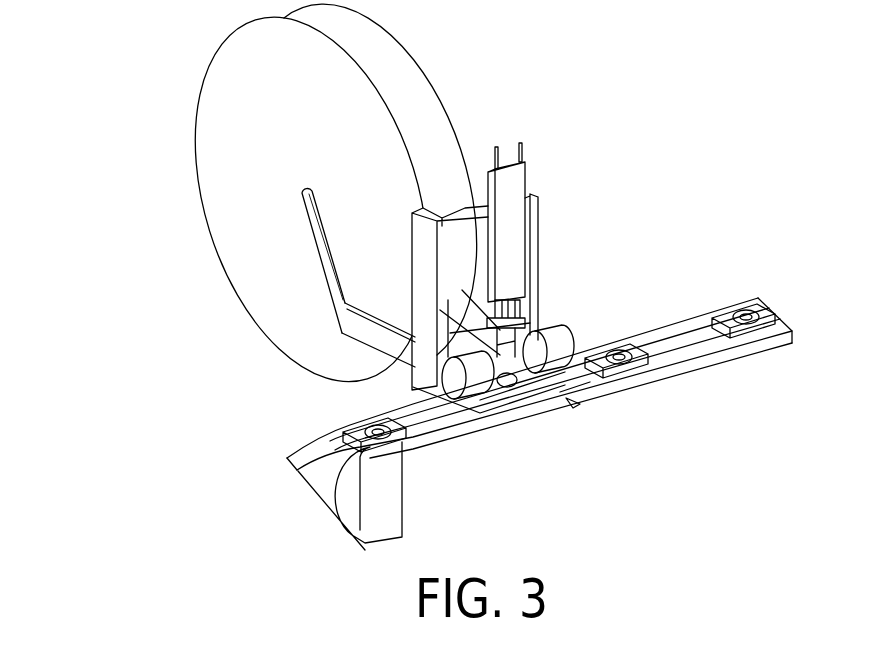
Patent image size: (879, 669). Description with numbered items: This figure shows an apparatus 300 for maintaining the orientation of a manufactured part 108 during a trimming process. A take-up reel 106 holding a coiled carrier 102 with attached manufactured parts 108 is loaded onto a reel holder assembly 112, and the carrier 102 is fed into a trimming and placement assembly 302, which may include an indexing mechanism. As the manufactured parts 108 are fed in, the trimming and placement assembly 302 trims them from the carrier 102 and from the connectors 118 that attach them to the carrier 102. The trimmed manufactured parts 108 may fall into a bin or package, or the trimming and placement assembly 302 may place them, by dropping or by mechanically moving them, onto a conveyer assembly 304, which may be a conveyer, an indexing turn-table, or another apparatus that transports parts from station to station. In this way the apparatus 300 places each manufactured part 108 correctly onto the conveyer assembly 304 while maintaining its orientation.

The apparatus 300 is at (156, 93).
The trimming and placement assembly 302 is at (527, 180).
The conveyer assembly 304 is at (721, 311).
The take-up reel 106 is at (222, 262).
The reel holder assembly 112 is at (333, 311).
The manufactured part 108 is at (505, 400).
The connectors 118 is at (573, 402).
The carrier 102 is at (576, 400).